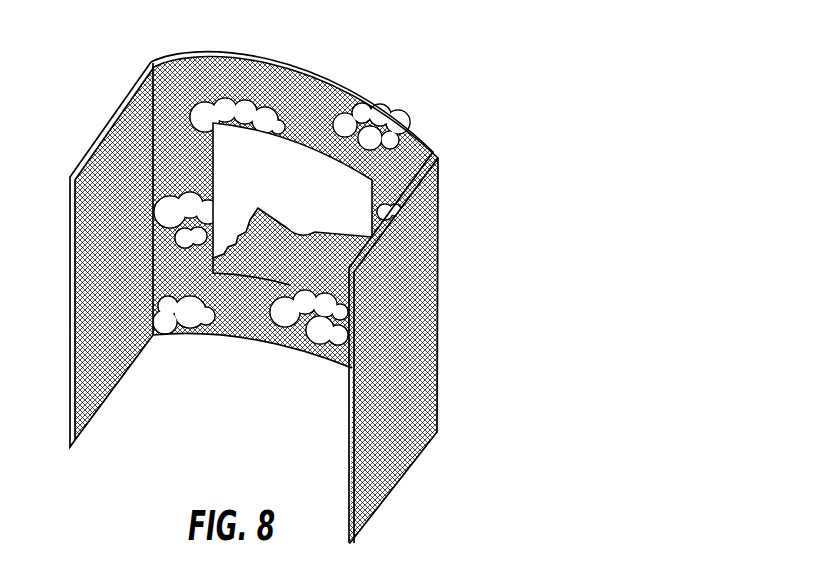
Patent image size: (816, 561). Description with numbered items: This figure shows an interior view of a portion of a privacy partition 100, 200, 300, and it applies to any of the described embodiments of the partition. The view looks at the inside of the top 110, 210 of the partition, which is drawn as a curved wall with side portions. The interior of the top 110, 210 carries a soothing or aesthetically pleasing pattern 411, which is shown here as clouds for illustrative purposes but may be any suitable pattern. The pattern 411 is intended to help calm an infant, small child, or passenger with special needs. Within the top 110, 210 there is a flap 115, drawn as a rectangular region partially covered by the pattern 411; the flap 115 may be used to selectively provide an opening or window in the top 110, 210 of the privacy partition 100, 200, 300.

The privacy partition 100 is at (370, 271).
The privacy partition 200 is at (370, 271).
The privacy partition 300 is at (474, 60).
The top 110 is at (254, 271).
The top 210 is at (254, 271).
The pattern 411 is at (382, 125).
The flap 115 is at (290, 230).